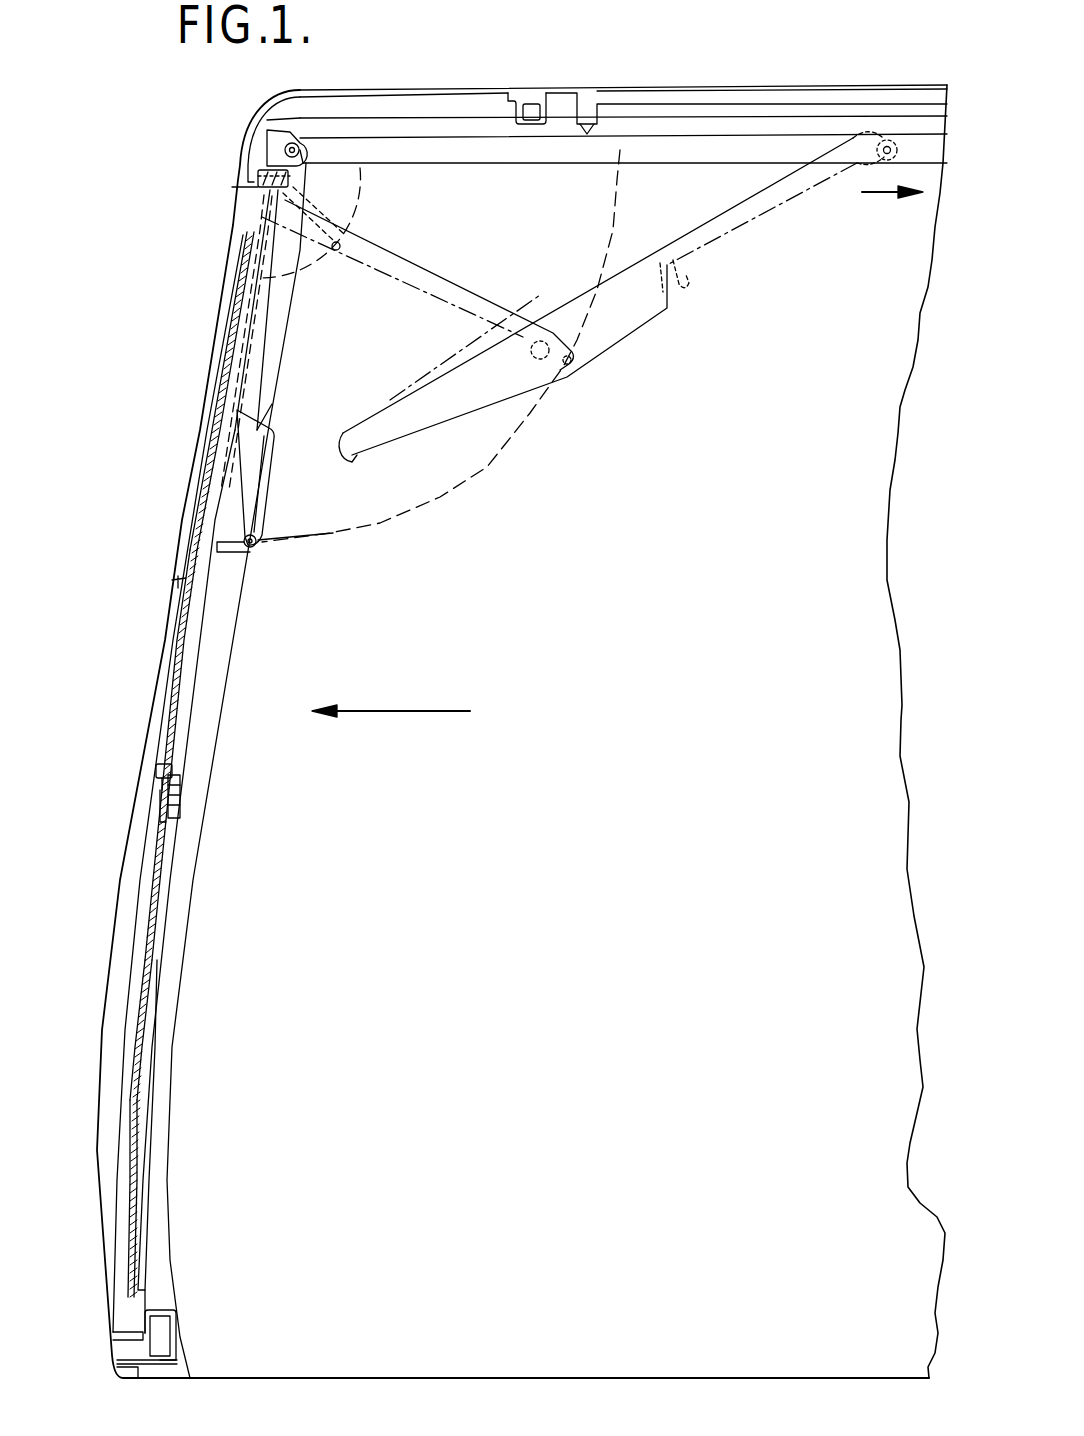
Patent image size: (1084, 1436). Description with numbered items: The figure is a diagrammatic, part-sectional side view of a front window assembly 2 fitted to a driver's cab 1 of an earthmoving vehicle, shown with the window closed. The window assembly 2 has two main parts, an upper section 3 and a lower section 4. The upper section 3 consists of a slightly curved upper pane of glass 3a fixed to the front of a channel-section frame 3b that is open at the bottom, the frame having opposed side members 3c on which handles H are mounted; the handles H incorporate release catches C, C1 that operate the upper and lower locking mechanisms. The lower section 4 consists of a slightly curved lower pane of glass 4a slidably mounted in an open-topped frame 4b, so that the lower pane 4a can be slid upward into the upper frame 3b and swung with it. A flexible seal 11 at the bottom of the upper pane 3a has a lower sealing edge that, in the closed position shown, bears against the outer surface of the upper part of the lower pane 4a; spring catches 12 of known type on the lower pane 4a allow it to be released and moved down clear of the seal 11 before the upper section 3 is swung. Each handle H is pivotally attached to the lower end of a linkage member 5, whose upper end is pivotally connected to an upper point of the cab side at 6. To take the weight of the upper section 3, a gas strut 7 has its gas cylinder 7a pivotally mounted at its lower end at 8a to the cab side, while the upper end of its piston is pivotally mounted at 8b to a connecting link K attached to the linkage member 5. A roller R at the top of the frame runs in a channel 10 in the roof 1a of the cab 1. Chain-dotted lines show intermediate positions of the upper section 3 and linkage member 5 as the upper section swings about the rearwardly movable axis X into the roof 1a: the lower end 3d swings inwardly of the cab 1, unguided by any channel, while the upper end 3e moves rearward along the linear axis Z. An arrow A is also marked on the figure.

The driver's cab 1 is at (175, 560).
The roof 1a is at (710, 132).
The front window assembly 2 is at (163, 794).
The upper section 3 is at (170, 654).
The upper pane of glass 3a is at (172, 690).
The frame 3b is at (192, 605).
The side members 3c is at (208, 567).
The lower end of the upper section 3d is at (356, 468).
The upper end of the upper section 3e is at (850, 158).
The lower section 4 is at (152, 938).
The lower pane of glass 4a is at (150, 1048).
The open-topped frame 4b is at (147, 1119).
The linkage member 5 is at (257, 474).
The pivotal connection 6 is at (256, 180).
The gas strut 7 is at (228, 384).
The gas cylinder 7a is at (216, 496).
The lower pivotal mounting 8a is at (172, 581).
The upper pivotal mounting 8b is at (250, 277).
The channel 10 is at (620, 150).
The flexible seal 11 is at (160, 774).
The spring catch 12 is at (180, 800).
The direction arrow A is at (405, 717).
The release catch C is at (268, 406).
The point C1 is at (240, 412).
The handle H is at (263, 498).
The connecting link K is at (265, 298).
The roller R is at (292, 143).
The rearwardly movable axis X is at (299, 150).
The linear axis Z is at (892, 215).